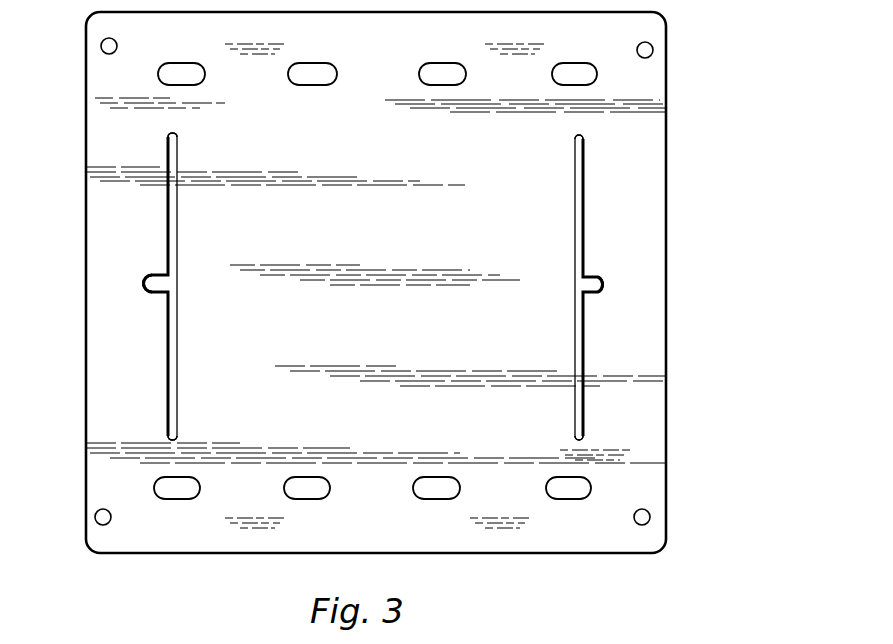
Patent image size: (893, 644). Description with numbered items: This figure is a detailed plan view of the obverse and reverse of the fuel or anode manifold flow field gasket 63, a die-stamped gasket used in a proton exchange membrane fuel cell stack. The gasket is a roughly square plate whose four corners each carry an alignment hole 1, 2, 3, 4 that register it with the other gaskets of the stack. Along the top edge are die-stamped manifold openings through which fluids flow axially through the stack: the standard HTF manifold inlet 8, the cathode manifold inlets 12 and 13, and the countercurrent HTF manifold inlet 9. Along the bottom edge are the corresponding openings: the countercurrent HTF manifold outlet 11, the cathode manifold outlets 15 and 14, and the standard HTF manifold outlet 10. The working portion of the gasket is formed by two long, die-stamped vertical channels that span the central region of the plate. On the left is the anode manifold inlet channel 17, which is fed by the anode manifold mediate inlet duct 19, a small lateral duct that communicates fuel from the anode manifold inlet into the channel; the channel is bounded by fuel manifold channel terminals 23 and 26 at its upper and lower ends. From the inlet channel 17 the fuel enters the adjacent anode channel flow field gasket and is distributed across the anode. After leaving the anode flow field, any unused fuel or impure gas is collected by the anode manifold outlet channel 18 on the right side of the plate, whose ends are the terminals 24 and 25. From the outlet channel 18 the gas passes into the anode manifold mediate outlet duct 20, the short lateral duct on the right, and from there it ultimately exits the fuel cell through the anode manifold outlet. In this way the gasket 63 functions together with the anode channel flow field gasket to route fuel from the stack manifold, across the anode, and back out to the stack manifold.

The anode manifold flow field gasket 63 is at (708, 212).
The alignment hole 1 is at (101, 46).
The alignment hole 2 is at (653, 50).
The alignment hole 3 is at (650, 515).
The alignment hole 4 is at (95, 517).
The standard HTF manifold inlet 8 is at (170, 64).
The countercurrent HTF manifold inlet 9 is at (562, 64).
The standard HTF manifold outlet 10 is at (558, 498).
The countercurrent HTF manifold outlet 11 is at (166, 498).
The cathode manifold inlet 12 is at (300, 64).
The cathode manifold inlet 13 is at (430, 64).
The cathode manifold outlet 14 is at (425, 498).
The cathode manifold outlet 15 is at (296, 498).
The anode manifold inlet channel 17 is at (172, 218).
The anode manifold outlet channel 18 is at (576, 347).
The anode manifold mediate inlet duct 19 is at (150, 282).
The anode manifold mediate outlet duct 20 is at (600, 282).
The fuel manifold channel terminal 23 is at (178, 135).
The right rail upper end 24 is at (575, 138).
The right rail lower end 25 is at (575, 437).
The fuel manifold channel terminal 26 is at (178, 437).